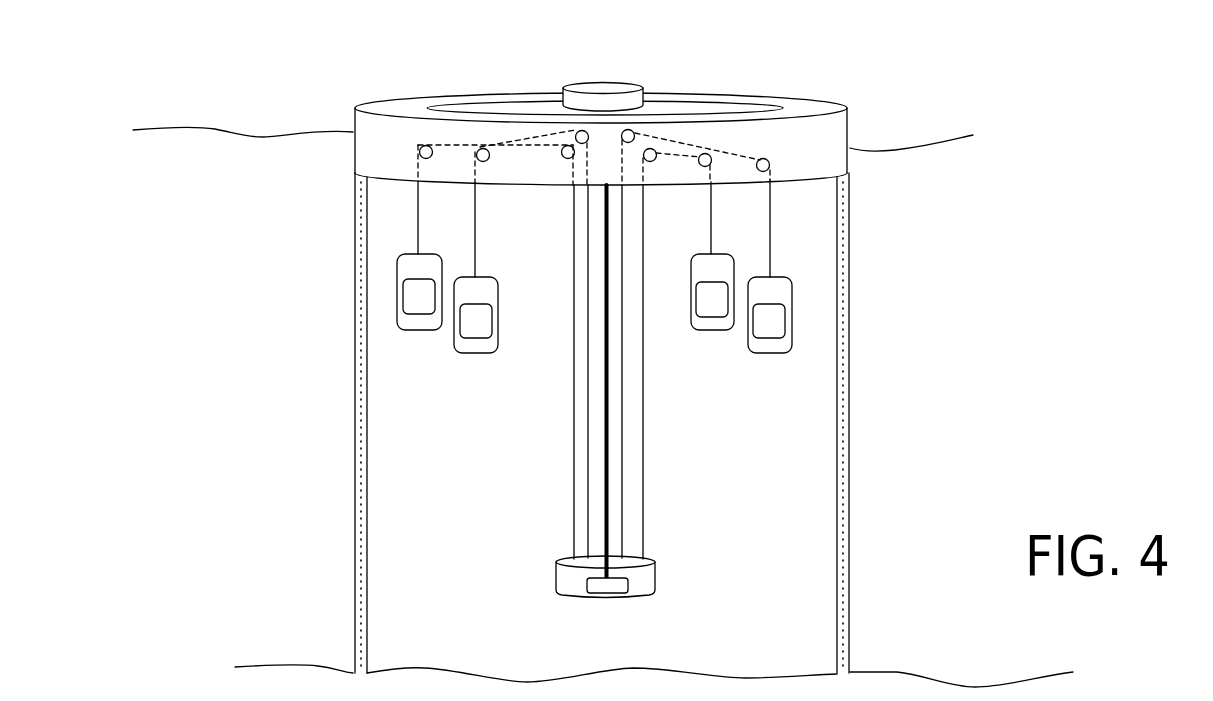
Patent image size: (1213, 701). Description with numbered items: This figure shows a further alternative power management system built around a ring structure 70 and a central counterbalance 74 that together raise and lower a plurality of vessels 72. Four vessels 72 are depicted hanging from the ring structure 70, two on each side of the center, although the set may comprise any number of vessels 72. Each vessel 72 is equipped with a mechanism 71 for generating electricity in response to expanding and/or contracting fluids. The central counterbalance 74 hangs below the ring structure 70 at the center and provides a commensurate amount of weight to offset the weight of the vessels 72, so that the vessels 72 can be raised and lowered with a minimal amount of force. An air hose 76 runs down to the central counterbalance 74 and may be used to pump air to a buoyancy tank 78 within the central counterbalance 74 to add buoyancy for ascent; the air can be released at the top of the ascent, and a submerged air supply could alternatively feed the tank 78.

The ring structure 70 is at (372, 68).
The mechanism for generating electricity 71 is at (473, 323).
The vessels 72 is at (430, 346).
The central counterbalance 74 is at (562, 591).
The air hose 76 is at (608, 462).
The buoyancy tank 78 is at (610, 583).